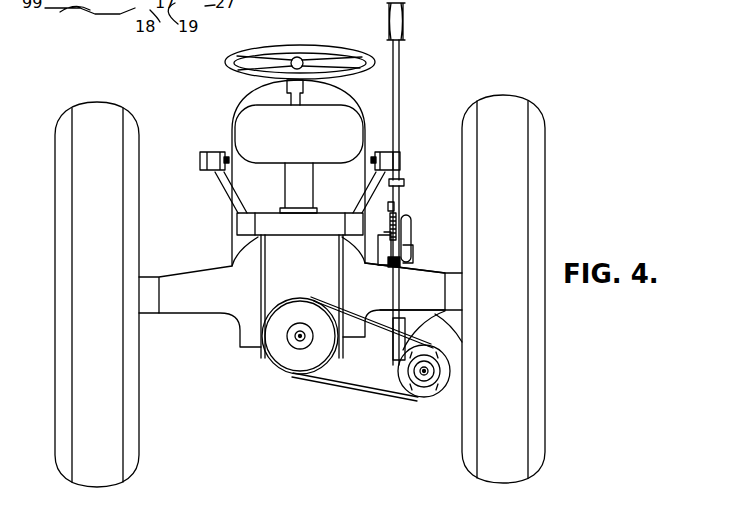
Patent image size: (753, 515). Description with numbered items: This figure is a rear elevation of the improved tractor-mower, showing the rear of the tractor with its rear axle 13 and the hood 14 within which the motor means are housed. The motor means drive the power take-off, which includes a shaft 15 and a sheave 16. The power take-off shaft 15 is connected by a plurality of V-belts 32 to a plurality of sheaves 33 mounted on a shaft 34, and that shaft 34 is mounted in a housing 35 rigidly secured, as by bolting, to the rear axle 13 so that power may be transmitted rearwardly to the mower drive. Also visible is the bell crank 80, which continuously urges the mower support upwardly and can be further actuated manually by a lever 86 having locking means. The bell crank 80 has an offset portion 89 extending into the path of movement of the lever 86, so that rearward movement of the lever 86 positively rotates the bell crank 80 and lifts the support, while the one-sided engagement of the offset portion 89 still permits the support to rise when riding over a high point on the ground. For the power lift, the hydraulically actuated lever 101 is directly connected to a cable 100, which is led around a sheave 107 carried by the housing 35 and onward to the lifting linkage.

The rear axle 13 is at (433, 273).
The hood 14 is at (252, 98).
The power take-off shaft 15 is at (300, 337).
The sheave 16 is at (295, 363).
The V-belts 32 is at (343, 383).
The sheaves 33 is at (403, 388).
The shaft 34 is at (422, 380).
The housing 35 is at (448, 330).
The bell crank 80 is at (410, 246).
The lever 86 is at (400, 124).
The offset portion 89 is at (403, 222).
The cable 100 is at (397, 288).
The hydraulically actuated lever 101 is at (370, 172).
The sheave 107 is at (397, 355).